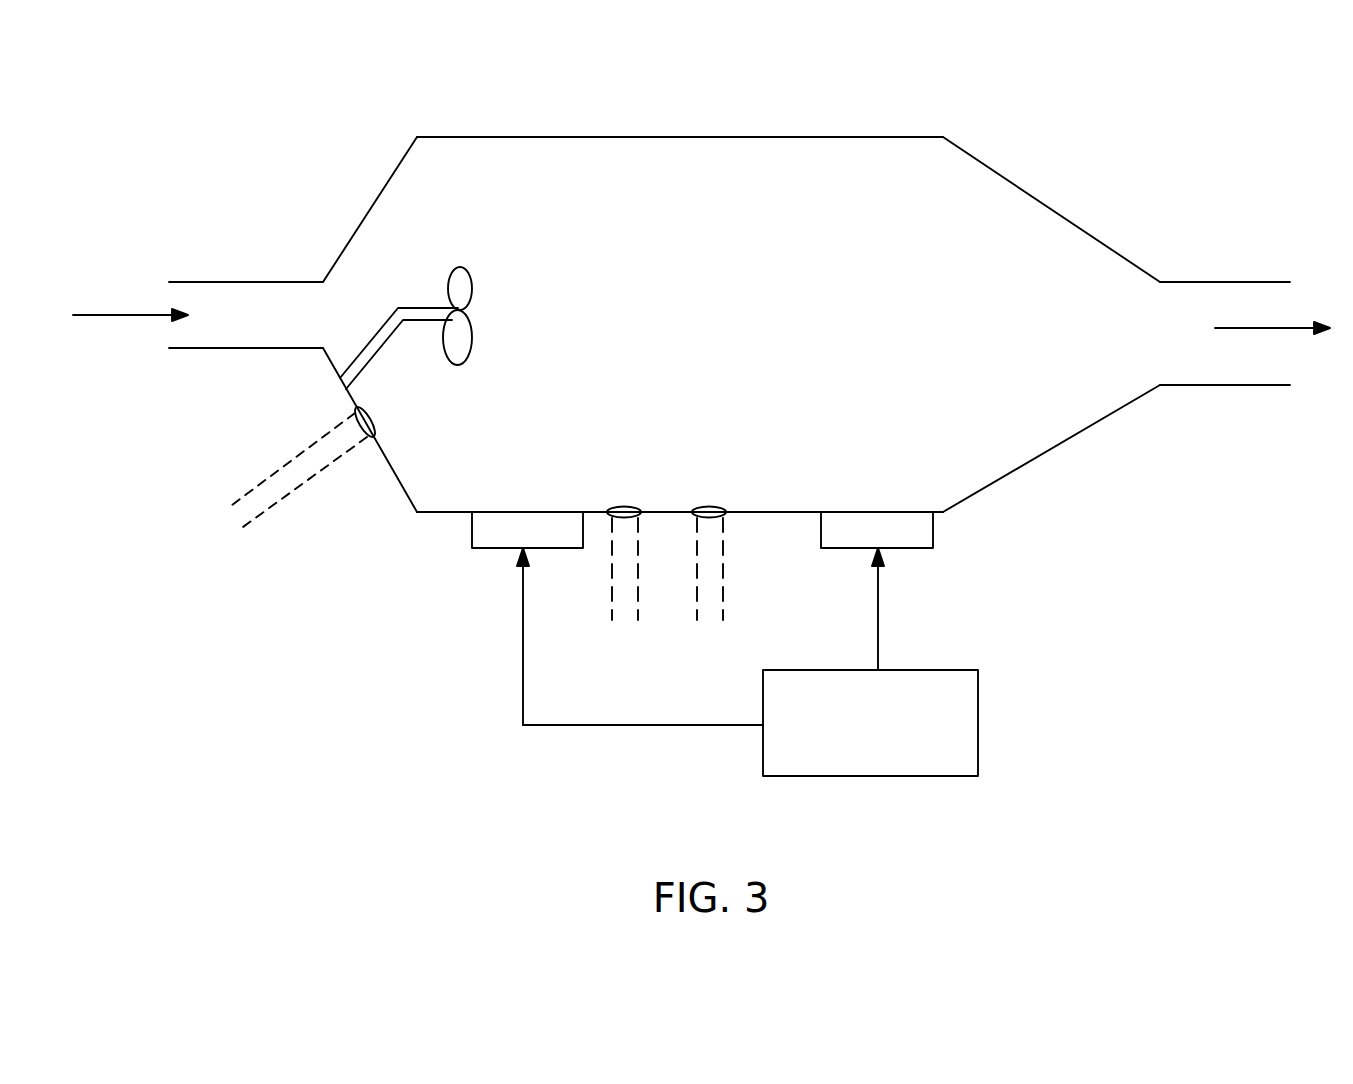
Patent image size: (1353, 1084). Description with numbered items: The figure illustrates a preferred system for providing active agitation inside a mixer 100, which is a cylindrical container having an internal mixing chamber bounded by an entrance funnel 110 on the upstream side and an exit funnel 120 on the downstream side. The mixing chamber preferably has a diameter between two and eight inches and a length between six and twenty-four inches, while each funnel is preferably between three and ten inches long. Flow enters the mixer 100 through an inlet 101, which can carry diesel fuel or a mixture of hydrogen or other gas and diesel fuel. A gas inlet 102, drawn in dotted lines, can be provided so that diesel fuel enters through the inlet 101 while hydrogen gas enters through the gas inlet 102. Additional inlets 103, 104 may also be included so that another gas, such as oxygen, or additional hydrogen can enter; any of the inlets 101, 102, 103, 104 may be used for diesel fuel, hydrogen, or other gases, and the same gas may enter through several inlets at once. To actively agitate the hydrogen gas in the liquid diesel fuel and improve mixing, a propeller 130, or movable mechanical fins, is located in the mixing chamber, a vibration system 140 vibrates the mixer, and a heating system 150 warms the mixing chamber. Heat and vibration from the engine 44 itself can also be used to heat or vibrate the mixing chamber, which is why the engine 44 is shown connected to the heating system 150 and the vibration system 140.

The mixer 100 is at (815, 157).
The inlet 101 is at (248, 292).
The gas inlet 102 is at (324, 447).
The inlet 103 is at (625, 570).
The inlet 104 is at (717, 558).
The entrance funnel 110 is at (400, 208).
The exit funnel 120 is at (1040, 230).
The propeller 130 is at (460, 277).
The vibration system 140 is at (923, 528).
The heating system 150 is at (485, 533).
The engine 44 is at (880, 762).